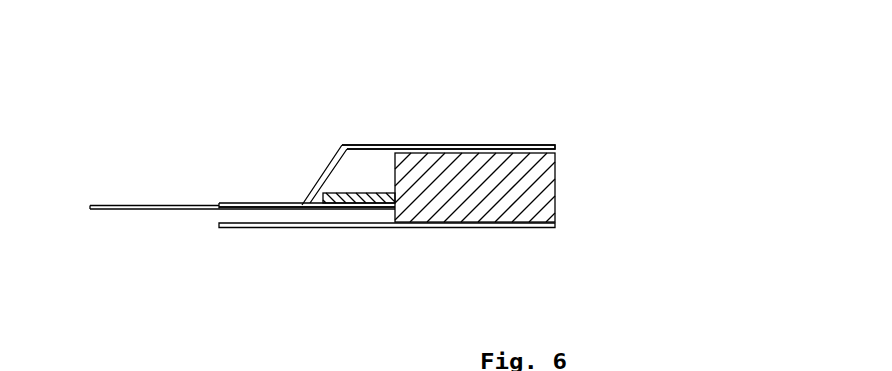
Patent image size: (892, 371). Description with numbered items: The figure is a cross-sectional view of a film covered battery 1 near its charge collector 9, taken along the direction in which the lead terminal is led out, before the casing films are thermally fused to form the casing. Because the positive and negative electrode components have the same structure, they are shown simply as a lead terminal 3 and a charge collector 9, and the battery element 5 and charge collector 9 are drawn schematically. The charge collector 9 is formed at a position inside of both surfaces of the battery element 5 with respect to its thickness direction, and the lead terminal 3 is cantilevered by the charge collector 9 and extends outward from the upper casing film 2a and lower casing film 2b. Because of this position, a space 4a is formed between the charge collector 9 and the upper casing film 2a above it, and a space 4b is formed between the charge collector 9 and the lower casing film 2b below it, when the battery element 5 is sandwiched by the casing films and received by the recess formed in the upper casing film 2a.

The film covered battery 1 is at (507, 130).
The upper casing film 2a is at (389, 147).
The lower casing film 2b is at (347, 228).
The lead terminal 3 is at (167, 206).
The space 4a is at (342, 145).
The space 4b is at (380, 217).
The battery element 5 is at (483, 208).
The charge collector 9 is at (350, 193).